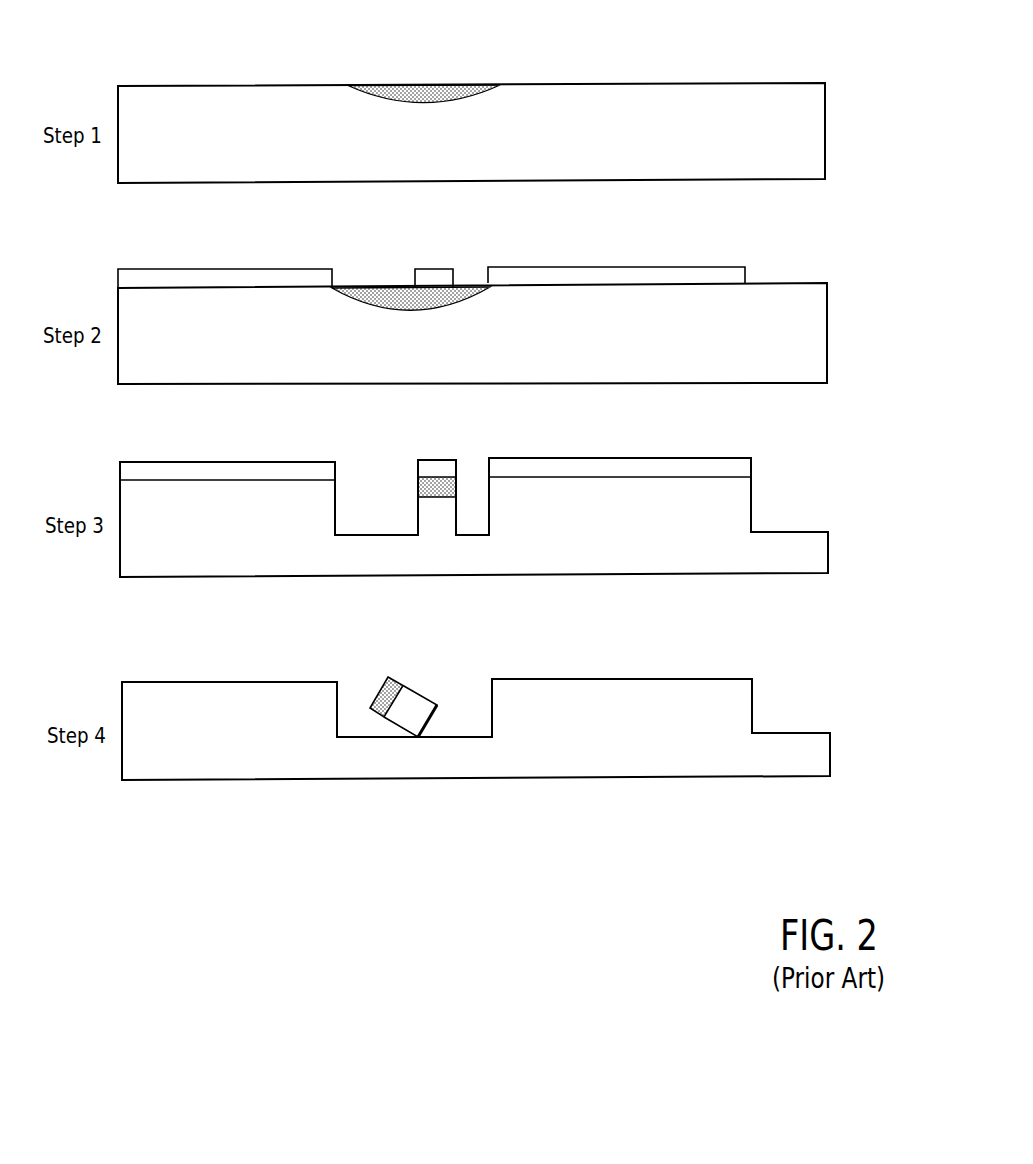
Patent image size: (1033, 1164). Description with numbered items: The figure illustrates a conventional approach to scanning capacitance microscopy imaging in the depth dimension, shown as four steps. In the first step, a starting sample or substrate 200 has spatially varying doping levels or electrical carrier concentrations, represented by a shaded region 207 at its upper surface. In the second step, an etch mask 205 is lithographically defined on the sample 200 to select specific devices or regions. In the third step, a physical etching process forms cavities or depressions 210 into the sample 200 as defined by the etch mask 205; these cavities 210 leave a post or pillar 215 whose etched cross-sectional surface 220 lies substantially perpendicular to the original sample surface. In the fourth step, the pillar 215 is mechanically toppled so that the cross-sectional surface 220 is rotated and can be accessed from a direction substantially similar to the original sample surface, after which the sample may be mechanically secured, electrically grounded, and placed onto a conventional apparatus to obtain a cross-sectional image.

The substrate 200 is at (488, 144).
The etch mask 205 is at (568, 272).
The shaded region 207 is at (415, 83).
The cavities 210 is at (372, 497).
The pillar 215 is at (436, 514).
The cross-sectional surface 220 is at (457, 505).